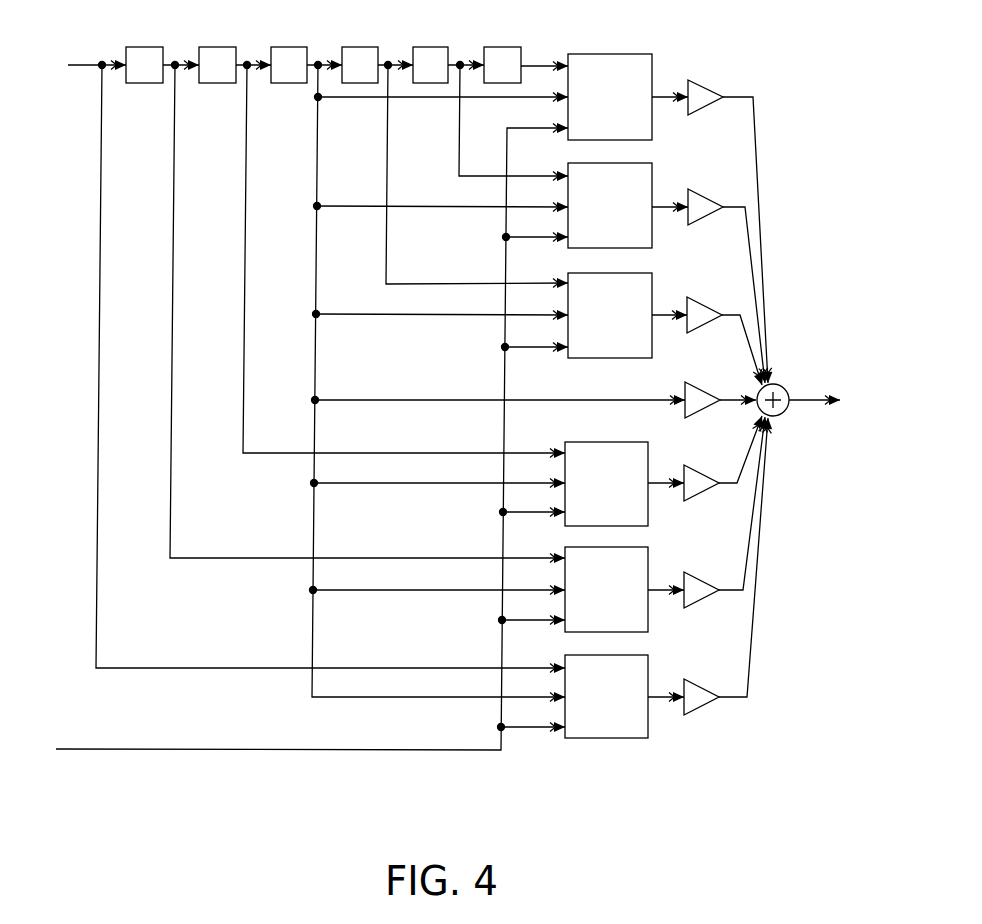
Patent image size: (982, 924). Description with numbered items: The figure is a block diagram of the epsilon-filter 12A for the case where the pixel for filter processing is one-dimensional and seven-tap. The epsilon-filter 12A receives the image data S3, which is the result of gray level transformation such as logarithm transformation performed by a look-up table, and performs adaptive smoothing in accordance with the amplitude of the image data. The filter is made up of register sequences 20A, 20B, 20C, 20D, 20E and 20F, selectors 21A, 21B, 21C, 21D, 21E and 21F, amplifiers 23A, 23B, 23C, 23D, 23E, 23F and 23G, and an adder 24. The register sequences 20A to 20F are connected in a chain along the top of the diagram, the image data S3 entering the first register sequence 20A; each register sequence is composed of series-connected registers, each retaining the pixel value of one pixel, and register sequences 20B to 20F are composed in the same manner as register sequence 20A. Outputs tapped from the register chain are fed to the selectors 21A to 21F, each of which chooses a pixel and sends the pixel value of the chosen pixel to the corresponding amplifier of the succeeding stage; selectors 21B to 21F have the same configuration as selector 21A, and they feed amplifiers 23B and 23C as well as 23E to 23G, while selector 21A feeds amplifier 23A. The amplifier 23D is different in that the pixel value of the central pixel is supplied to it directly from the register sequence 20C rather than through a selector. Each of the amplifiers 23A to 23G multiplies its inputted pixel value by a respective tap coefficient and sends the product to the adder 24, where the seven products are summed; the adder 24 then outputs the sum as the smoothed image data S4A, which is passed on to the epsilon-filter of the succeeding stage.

The ε-filter 12A is at (439, 387).
The register sequence 20A is at (148, 47).
The register sequence 20B is at (221, 47).
The register sequence 20C is at (293, 47).
The register sequence 20D is at (364, 47).
The register sequence 20E is at (435, 47).
The register sequence 20F is at (507, 47).
The selector 21A is at (645, 54).
The selector 21B is at (645, 163).
The selector 21C is at (645, 273).
The selector 21D is at (642, 442).
The selector 21E is at (642, 547).
The selector 21F is at (642, 655).
The amplifier 23A is at (712, 84).
The amplifier 23B is at (712, 193).
The amplifier 23C is at (722, 295).
The amplifier 23D is at (720, 380).
The amplifier 23E is at (718, 463).
The amplifier 23F is at (718, 571).
The amplifier 23G is at (718, 676).
The adder 24 is at (779, 384).
The image data S3 is at (80, 64).
The smoothed image data S4A is at (808, 399).